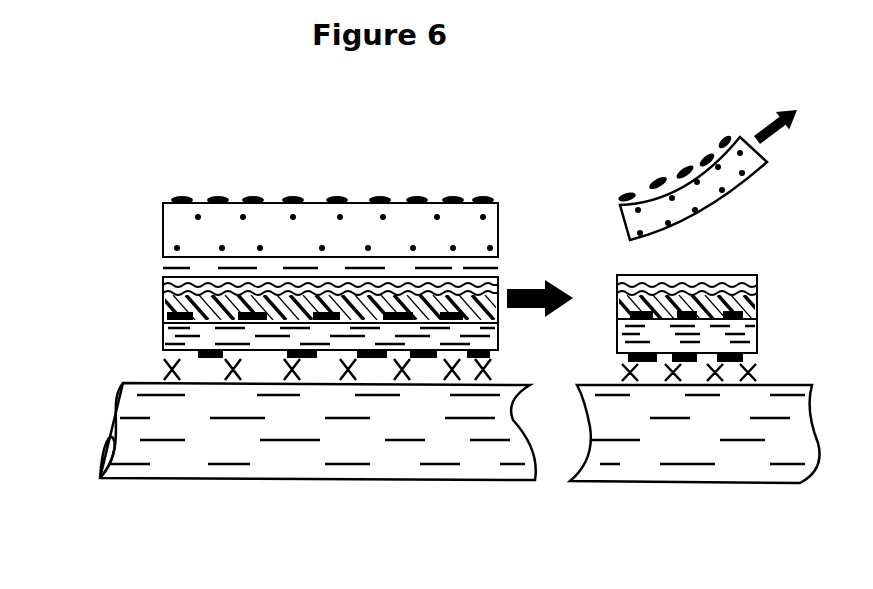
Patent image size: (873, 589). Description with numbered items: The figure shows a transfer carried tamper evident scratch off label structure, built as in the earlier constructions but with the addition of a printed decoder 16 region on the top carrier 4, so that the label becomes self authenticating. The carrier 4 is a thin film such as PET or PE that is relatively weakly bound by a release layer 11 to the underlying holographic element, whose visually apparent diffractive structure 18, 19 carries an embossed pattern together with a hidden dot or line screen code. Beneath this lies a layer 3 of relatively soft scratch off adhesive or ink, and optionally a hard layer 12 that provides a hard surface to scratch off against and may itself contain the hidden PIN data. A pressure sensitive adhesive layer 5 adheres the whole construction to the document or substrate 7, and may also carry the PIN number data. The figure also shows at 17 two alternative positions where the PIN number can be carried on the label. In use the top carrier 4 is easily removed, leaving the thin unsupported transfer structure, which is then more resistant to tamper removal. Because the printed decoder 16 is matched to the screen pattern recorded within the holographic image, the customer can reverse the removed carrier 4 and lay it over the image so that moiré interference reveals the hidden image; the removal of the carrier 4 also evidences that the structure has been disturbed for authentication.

The scratch off adhesive layer 3 is at (175, 311).
The carrier layer 4 is at (197, 233).
The pressure sensitive adhesive layer 5 is at (160, 367).
The substrate 7 is at (482, 470).
The release layer 11 is at (163, 267).
The hard layer 12 is at (165, 339).
The printed decoder 16 is at (212, 195).
The PIN number positions 17 is at (498, 325).
The diffractive structure 18 is at (178, 280).
The diffractive structure 19 is at (165, 292).